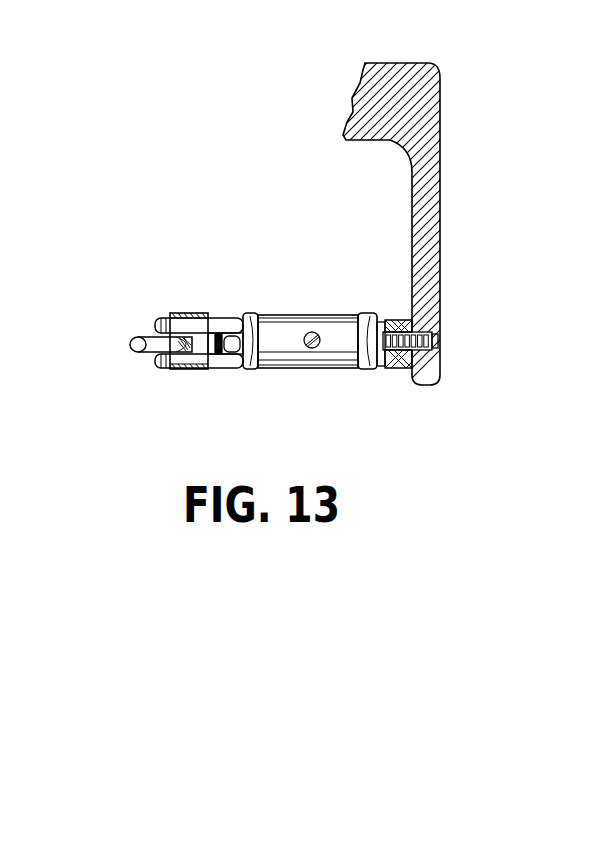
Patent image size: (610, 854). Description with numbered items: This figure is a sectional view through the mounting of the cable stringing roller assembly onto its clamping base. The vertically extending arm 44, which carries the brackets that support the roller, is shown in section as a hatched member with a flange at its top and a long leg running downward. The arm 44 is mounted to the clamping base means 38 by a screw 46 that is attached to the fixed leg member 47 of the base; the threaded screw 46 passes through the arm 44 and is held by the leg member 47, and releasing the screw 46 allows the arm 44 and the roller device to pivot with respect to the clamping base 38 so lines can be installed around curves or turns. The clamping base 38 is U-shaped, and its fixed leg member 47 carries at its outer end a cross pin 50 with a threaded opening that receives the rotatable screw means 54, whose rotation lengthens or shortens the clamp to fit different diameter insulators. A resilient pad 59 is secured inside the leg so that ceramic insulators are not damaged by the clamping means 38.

The arm 44 is at (441, 148).
The screw 46 is at (441, 339).
The fixed leg member 47 is at (393, 368).
The clamping base means 38 is at (282, 305).
The resilient pad 59 is at (288, 352).
The cross pin 50 is at (183, 313).
The screw means 54 is at (132, 350).